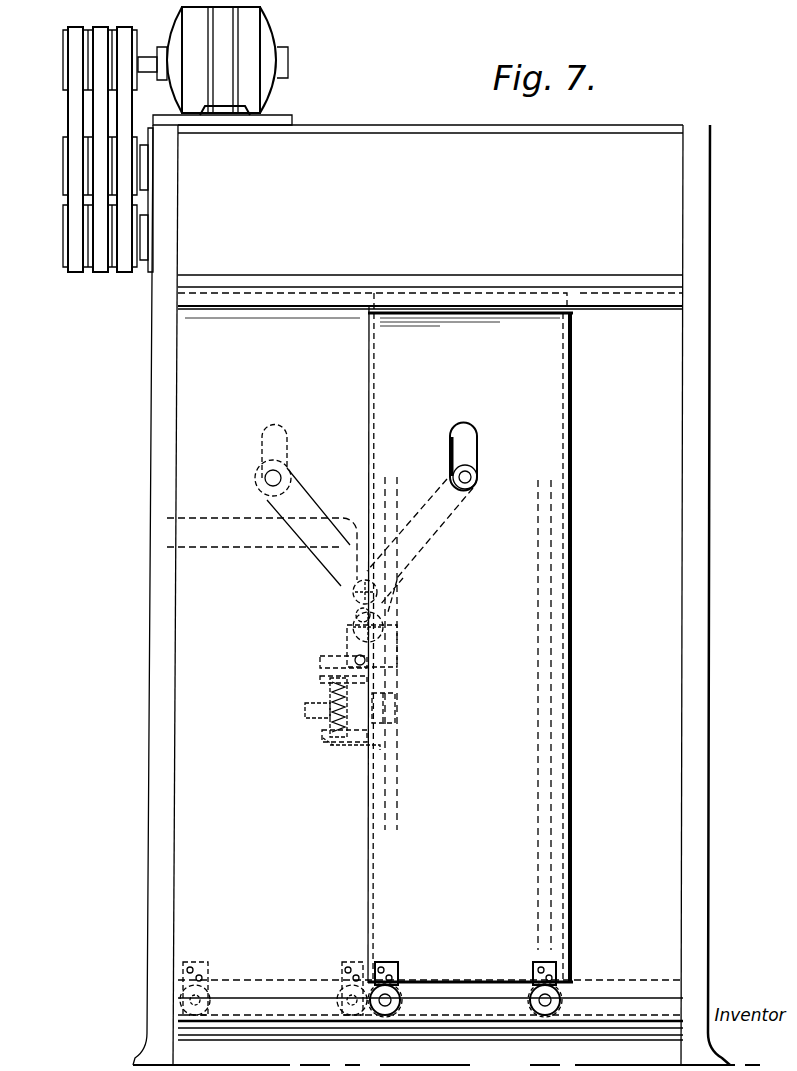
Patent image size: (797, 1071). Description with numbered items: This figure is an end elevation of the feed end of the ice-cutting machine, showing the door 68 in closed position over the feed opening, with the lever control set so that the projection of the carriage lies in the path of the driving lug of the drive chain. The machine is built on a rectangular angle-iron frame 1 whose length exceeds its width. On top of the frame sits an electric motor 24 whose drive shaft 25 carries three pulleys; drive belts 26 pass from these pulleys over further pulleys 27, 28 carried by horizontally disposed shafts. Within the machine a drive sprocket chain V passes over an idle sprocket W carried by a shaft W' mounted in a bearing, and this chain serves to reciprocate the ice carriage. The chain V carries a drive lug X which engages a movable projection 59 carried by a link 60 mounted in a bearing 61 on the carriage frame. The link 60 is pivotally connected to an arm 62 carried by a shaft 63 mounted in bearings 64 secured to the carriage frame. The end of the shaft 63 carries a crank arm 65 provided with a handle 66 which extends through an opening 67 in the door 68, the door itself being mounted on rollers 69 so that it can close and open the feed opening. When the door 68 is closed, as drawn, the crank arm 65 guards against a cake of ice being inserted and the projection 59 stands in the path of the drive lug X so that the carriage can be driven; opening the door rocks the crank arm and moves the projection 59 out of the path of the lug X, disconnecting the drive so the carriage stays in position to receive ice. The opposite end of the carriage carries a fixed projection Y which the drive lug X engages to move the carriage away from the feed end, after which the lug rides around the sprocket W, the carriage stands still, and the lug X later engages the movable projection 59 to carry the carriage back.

The frame 1 is at (708, 720).
The electric motor 24 is at (250, 68).
The drive shaft 25 is at (150, 47).
The drive belts 26 is at (122, 32).
The pulley 27 is at (63, 142).
The pulley 28 is at (63, 236).
The movable projection 59 is at (320, 693).
The link 60 is at (383, 638).
The bearing 61 is at (323, 658).
The arm 62 is at (355, 613).
The shaft 63 is at (353, 590).
The bearings 64 is at (403, 580).
The crank arm 65 is at (440, 523).
The handle 66 is at (472, 476).
The opening 67 is at (465, 432).
The door 68 is at (379, 638).
The rollers 69 is at (393, 990).
The drive lug X is at (320, 680).
The fixed projection Y is at (323, 740).
The drive sprocket chain V is at (333, 750).
The idle sprocket W is at (401, 707).
The shaft W' is at (289, 717).